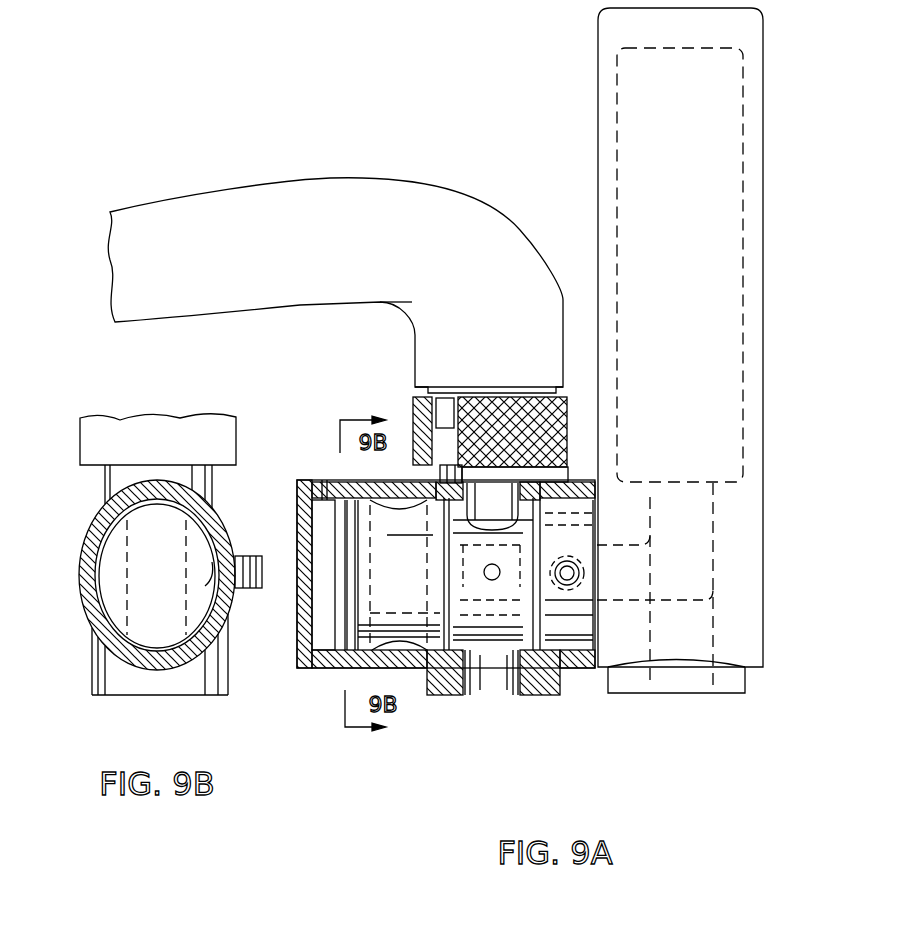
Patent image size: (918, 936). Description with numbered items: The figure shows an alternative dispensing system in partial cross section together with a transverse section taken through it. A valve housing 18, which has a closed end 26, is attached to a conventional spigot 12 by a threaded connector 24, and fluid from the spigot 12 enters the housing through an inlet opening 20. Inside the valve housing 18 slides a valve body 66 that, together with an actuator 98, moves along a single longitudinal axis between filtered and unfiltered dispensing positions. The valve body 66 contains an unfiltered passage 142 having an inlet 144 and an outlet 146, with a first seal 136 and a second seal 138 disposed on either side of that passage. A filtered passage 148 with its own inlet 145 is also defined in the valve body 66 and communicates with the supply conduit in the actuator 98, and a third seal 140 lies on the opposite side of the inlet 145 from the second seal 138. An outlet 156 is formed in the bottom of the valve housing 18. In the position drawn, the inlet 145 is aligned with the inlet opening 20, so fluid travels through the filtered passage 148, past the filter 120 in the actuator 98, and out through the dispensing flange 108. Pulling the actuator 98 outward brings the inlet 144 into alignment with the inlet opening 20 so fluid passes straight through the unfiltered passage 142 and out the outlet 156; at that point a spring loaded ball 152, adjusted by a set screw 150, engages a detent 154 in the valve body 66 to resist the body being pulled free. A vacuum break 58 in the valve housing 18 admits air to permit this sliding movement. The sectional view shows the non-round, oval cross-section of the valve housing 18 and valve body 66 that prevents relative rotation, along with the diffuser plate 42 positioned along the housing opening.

In FIG. 9A, the spigot 12 is at (249, 213).
In FIG. 9A, the threaded connector 24 is at (406, 405).
In FIG. 9B, the threaded connector 24 is at (83, 444).
In FIG. 9A, the vacuum break 58 is at (322, 480).
In FIG. 9A, the closed end 26 is at (297, 523).
In FIG. 9A, the inlet 144 is at (390, 510).
In FIG. 9A, the unfiltered passage 142 is at (390, 592).
In FIG. 9A, the inlet opening 20 is at (500, 487).
In FIG. 9A, the inlet 145 is at (547, 507).
In FIG. 9A, the filter 120 is at (720, 240).
In FIG. 9A, the actuator 98 is at (764, 357).
In FIG. 9A, the filtered passage 148 is at (513, 567).
In FIG. 9A, the set screw 150 is at (582, 572).
In FIG. 9A, the detent 154 is at (500, 578).
In FIG. 9A, the dispensing flange 108 is at (740, 681).
In FIG. 9A, the third seal 140 is at (565, 670).
In FIG. 9A, the outlet 156 is at (495, 685).
In FIG. 9A, the second seal 138 is at (437, 695).
In FIG. 9A, the valve housing 18 is at (430, 668).
In FIG. 9B, the valve housing 18 is at (88, 572).
In FIG. 9A, the outlet 146 is at (385, 668).
In FIG. 9A, the first seal 136 is at (330, 670).
In FIG. 9B, the diffuser plate 42 is at (140, 548).
In FIG. 9B, the valve body 66 is at (117, 612).
In FIG. 9B, the spring loaded ball 152 is at (213, 568).